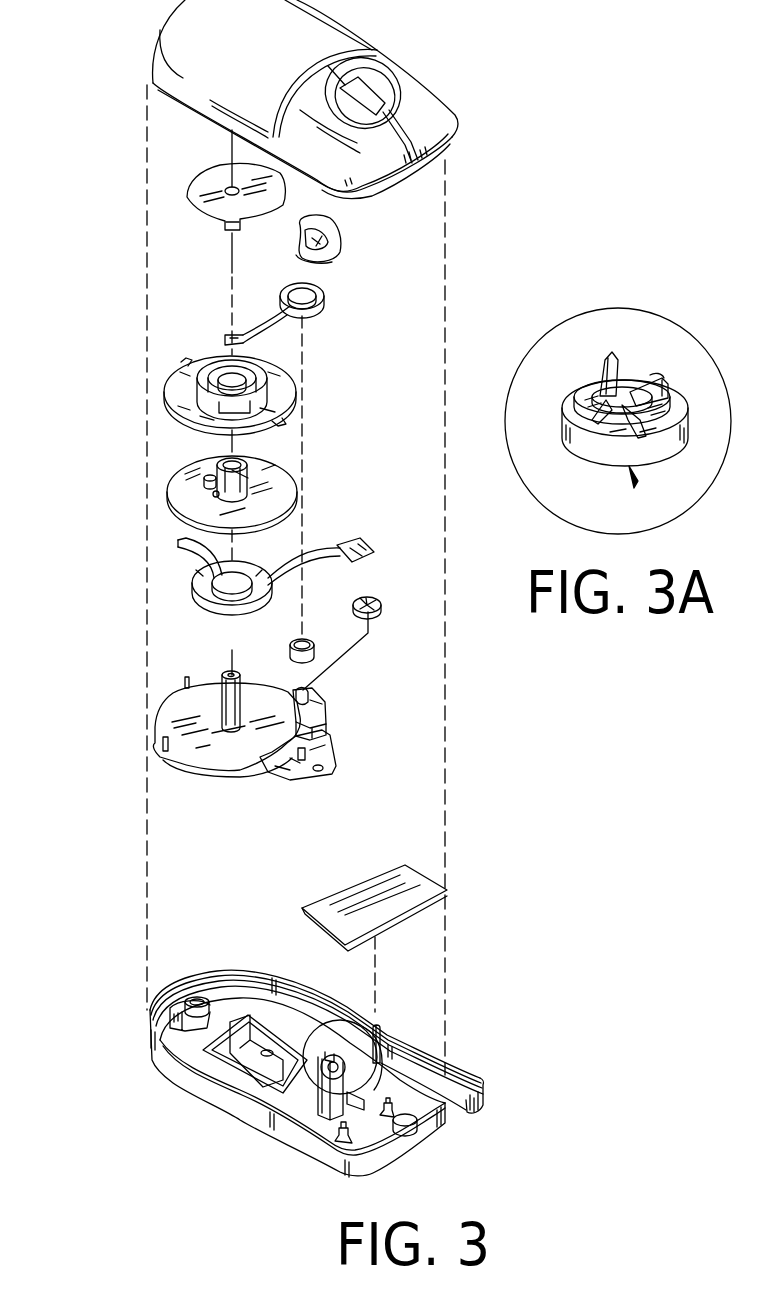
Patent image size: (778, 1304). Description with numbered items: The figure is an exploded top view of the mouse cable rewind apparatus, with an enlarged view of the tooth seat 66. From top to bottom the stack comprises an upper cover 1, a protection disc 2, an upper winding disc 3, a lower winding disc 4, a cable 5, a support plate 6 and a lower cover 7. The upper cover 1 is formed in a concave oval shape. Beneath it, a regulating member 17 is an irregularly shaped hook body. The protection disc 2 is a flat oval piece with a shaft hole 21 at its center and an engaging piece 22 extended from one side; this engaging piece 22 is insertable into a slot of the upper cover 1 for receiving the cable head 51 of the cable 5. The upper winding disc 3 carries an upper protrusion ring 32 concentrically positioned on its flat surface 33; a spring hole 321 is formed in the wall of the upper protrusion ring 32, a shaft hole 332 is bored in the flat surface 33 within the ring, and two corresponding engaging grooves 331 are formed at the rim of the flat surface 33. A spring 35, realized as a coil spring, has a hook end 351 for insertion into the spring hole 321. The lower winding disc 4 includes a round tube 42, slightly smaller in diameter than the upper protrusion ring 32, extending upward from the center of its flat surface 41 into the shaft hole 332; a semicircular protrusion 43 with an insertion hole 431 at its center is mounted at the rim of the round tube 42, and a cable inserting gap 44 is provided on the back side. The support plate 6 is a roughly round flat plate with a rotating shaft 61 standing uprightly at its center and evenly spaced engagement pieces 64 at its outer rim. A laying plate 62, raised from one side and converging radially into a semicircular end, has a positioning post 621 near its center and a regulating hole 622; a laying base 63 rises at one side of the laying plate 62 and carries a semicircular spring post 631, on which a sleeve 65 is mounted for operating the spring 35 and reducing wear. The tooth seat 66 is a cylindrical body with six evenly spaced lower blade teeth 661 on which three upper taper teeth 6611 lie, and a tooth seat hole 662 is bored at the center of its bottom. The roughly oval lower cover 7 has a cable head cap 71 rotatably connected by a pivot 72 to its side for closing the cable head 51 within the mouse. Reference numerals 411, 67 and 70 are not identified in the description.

In FIG. 3, the upper cover 1 is at (428, 80).
In FIG. 3, the protection disc 2 is at (156, 151).
In FIG. 3, the shaft hole 21 is at (224, 186).
In FIG. 3, the engaging piece 22 is at (222, 225).
In FIG. 3, the regulating member 17 is at (345, 240).
In FIG. 3, the spring 35 is at (296, 277).
In FIG. 3, the hook end 351 is at (225, 336).
In FIG. 3, the upper winding disc 3 is at (238, 365).
In FIG. 3, the engaging grooves 331 is at (182, 365).
In FIG. 3, the shaft hole 332 is at (214, 372).
In FIG. 3, the upper protrusion ring 32 is at (262, 368).
In FIG. 3, the spring hole 321 is at (262, 395).
In FIG. 3, the flat surface 33 is at (277, 410).
In FIG. 3, the lower winding disc 4 is at (236, 488).
In FIG. 3, the flat surface 41 is at (277, 470).
In FIG. 3, the boss hole 411 is at (240, 463).
In FIG. 3, the round tube 42 is at (240, 481).
In FIG. 3, the semicircular protrusion 43 is at (206, 484).
In FIG. 3, the insertion hole 431 is at (204, 478).
In FIG. 3, the cable inserting gap 44 is at (214, 496).
In FIG. 3, the cable 5 is at (232, 571).
In FIG. 3, the cable head 51 is at (373, 554).
In FIG. 3, the tooth seat 66 is at (358, 615).
In FIG. 3A, the tooth seat 66 is at (591, 410).
In FIG. 3, the sleeve 65 is at (289, 650).
In FIG. 3, the support plate 6 is at (226, 731).
In FIG. 3, the rotating shaft 61 is at (220, 700).
In FIG. 3, the engagement pieces 64 is at (303, 694).
In FIG. 3, the laying base 63 is at (322, 708).
In FIG. 3, the spring post 631 is at (314, 720).
In FIG. 3, the laying plate 62 is at (316, 755).
In FIG. 3, the positioning post 621 is at (302, 762).
In FIG. 3, the regulating hole 622 is at (335, 772).
In FIG. 3, the tab 67 is at (160, 755).
In FIG. 3, the pad 70 is at (345, 900).
In FIG. 3, the pivot 72 is at (380, 1028).
In FIG. 3, the cable head cap 71 is at (478, 1065).
In FIG. 3, the lower cover 7 is at (345, 1059).
In FIG. 3A, the lower blade teeth 661 is at (572, 392).
In FIG. 3A, the upper taper teeth 6611 is at (606, 372).
In FIG. 3A, the tooth seat hole 662 is at (634, 484).